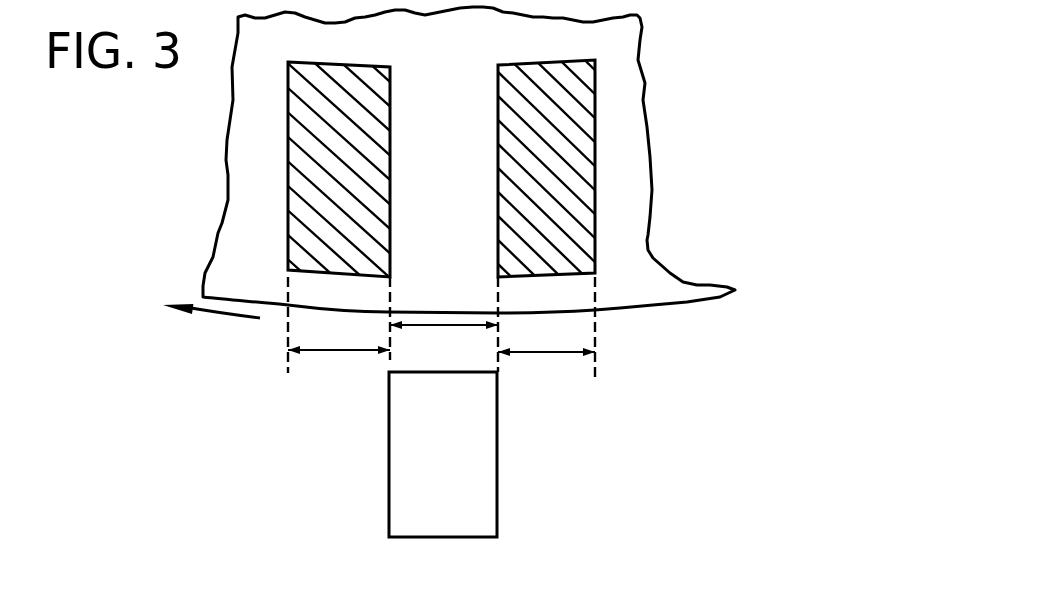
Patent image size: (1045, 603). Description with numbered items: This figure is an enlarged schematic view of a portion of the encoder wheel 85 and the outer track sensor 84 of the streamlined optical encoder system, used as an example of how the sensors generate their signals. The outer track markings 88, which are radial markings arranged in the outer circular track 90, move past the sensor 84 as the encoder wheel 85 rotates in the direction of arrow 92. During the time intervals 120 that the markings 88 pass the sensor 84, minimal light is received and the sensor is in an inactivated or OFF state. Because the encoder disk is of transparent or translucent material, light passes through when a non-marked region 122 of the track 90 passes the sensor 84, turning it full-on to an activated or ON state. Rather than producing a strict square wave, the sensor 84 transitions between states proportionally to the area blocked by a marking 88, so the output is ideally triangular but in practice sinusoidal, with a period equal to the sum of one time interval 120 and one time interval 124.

The optical encoder sensor 84 is at (402, 485).
The encoder wheel 85 is at (627, 182).
The radial markings 88 is at (507, 110).
The outer circular track 90 is at (485, 201).
The curved arrow 92 is at (231, 318).
The time interval 120 is at (335, 352).
The non-marked region 122 is at (468, 165).
The time interval 124 is at (455, 327).